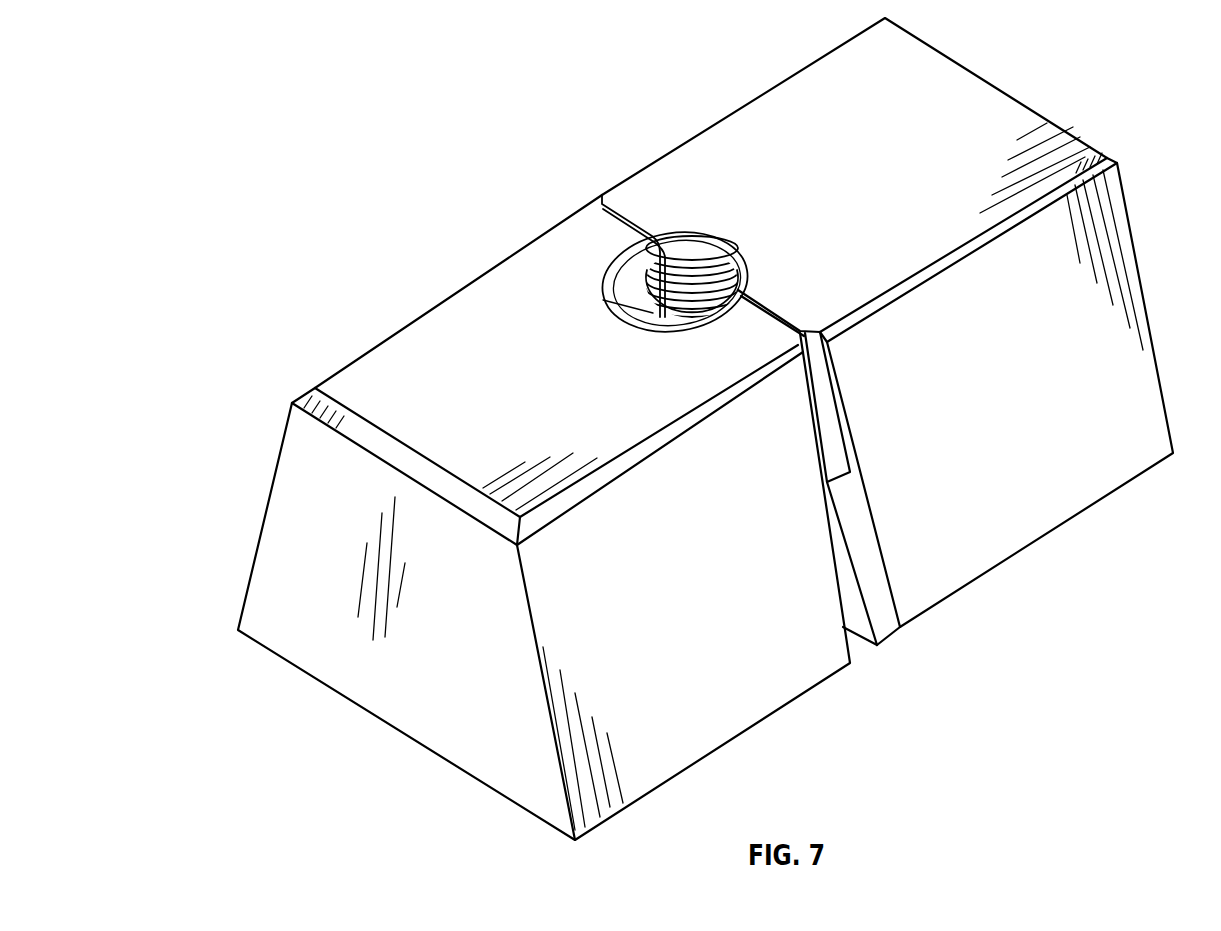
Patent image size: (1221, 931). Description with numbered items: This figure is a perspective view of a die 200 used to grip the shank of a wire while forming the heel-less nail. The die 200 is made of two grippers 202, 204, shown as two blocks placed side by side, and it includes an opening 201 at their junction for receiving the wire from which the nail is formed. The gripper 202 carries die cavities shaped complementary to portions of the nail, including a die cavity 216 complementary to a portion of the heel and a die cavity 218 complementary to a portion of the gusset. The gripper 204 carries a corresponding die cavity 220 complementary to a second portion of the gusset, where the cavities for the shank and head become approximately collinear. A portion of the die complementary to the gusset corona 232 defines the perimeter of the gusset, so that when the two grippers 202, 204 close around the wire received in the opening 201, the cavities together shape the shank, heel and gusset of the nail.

The die 200 is at (205, 176).
The opening 201 is at (677, 240).
The gripper 202 is at (452, 312).
The gripper 204 is at (763, 108).
The die cavity 216 is at (615, 333).
The die cavity 218 is at (627, 313).
The die cavity 220 is at (705, 283).
The gusset corona 232 is at (625, 265).